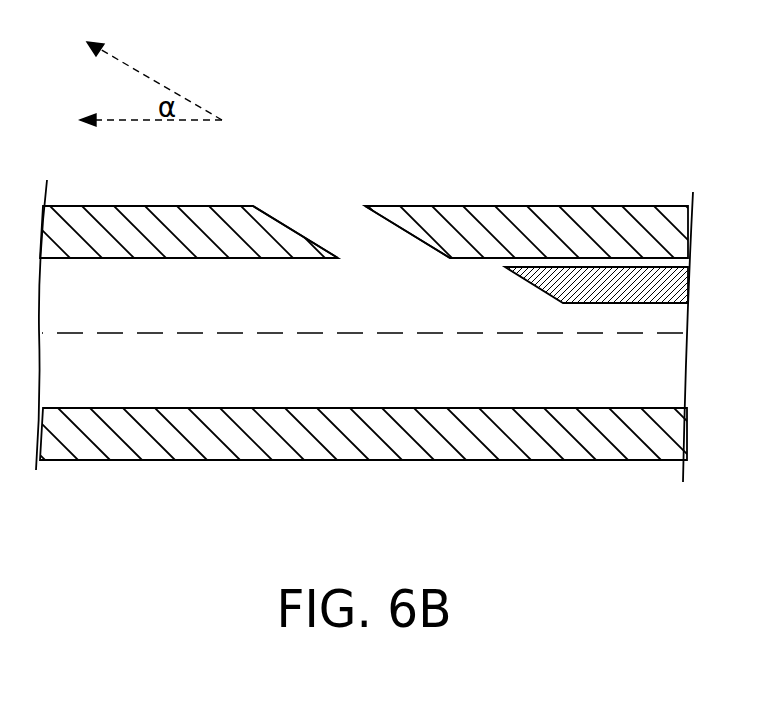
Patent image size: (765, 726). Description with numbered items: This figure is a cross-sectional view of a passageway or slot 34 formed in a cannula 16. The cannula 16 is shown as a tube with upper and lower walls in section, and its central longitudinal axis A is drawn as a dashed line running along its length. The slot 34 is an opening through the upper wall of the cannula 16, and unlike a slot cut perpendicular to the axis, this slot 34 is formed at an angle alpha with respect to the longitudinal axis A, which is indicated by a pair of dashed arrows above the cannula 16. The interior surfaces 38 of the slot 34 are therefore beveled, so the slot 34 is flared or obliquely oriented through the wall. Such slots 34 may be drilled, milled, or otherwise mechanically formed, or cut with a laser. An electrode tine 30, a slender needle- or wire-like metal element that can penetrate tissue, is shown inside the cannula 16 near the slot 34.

The cannula 16 is at (107, 218).
The interior surface 38 is at (272, 215).
The slot 34 is at (330, 196).
The electrode tine 30 is at (600, 302).
The longitudinal axis A is at (238, 334).